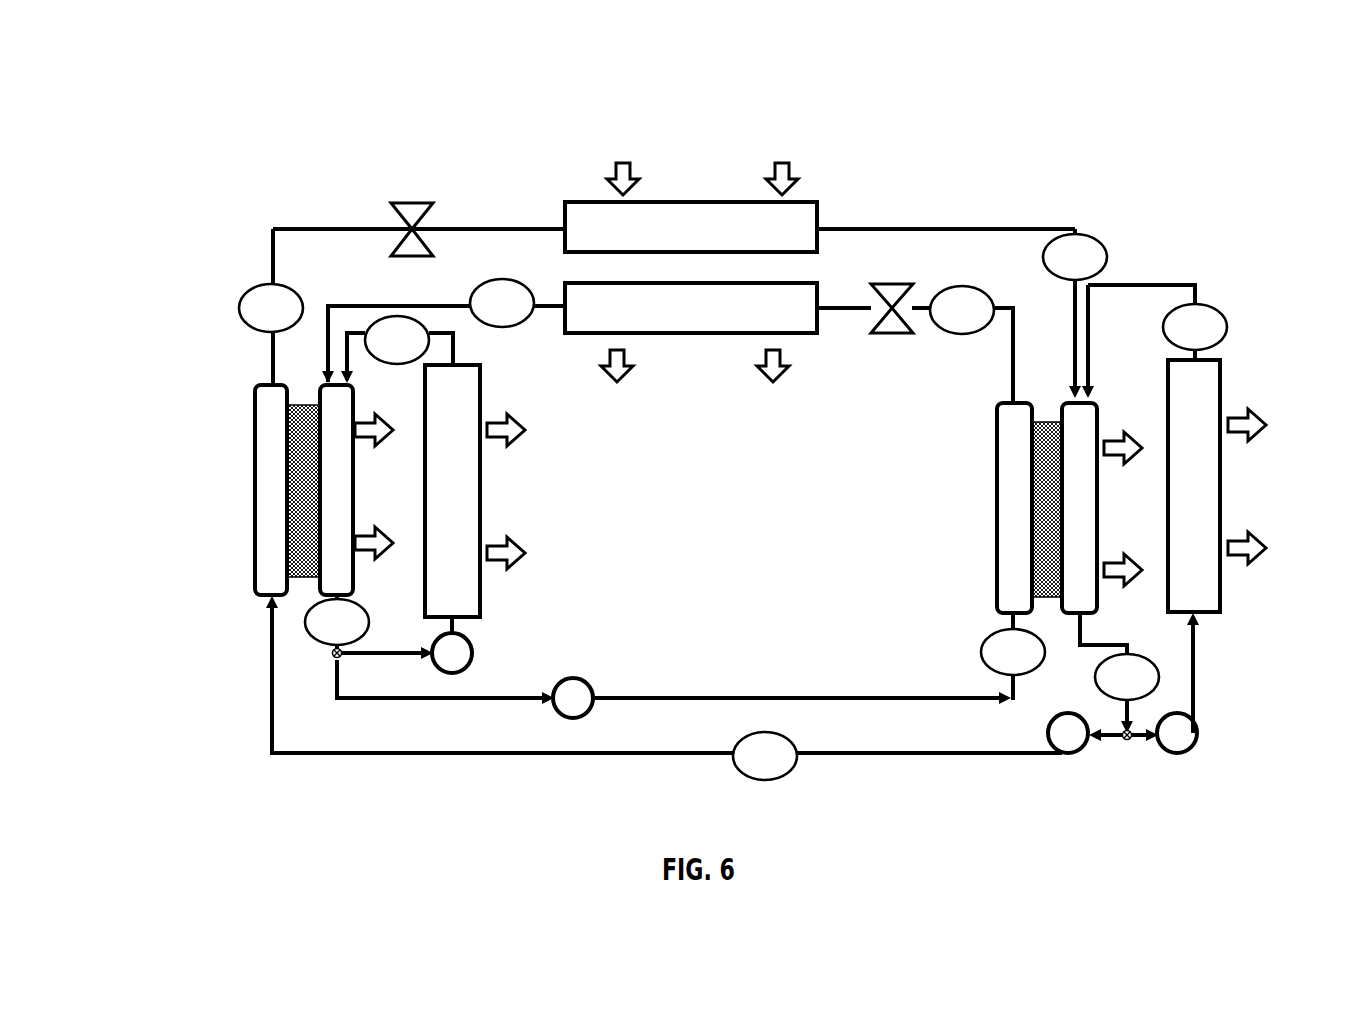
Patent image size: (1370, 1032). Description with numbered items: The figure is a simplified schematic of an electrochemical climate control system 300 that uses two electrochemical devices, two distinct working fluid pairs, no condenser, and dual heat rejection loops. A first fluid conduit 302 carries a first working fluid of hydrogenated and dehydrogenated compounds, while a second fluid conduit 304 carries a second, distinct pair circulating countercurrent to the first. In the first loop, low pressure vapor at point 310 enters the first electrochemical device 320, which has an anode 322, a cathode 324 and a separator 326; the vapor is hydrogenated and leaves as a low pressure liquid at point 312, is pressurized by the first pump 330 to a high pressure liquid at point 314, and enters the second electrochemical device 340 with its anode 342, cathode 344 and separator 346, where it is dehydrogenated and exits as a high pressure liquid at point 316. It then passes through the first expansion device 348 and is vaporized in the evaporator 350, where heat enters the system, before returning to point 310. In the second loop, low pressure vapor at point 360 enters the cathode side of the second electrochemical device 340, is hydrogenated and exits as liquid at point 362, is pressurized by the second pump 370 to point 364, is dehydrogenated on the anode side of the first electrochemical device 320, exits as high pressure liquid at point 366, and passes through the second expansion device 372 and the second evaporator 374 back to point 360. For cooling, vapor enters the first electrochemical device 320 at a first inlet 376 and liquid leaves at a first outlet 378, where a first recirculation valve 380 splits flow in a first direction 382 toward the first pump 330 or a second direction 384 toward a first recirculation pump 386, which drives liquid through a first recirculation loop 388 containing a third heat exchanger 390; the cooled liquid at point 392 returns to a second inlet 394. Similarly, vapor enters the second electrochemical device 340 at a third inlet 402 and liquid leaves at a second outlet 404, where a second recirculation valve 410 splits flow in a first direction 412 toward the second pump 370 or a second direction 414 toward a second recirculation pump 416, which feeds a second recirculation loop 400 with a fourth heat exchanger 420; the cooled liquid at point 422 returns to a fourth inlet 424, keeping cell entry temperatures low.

The electrochemical climate control system 300 is at (232, 98).
The first fluid conduit 302 is at (998, 228).
The second fluid conduit 304 is at (836, 305).
The point 310 is at (1094, 271).
The point 312 is at (1146, 691).
The point 314 is at (784, 770).
The point 316 is at (290, 322).
The first electrochemical device 320 is at (1026, 487).
The anode 322 is at (1012, 492).
The cathode 324 is at (1080, 490).
The separator 326 is at (1032, 545).
The first pump 330 is at (1072, 755).
The second electrochemical device 340 is at (295, 470).
The anode 342 is at (265, 425).
The cathode 344 is at (335, 553).
The separator 346 is at (288, 478).
The first expansion device 348 is at (415, 201).
The evaporator 350 is at (709, 243).
The point 360 is at (521, 317).
The point 362 is at (356, 636).
The point 364 is at (1032, 666).
The point 366 is at (981, 324).
The second pump 370 is at (593, 684).
The second expansion device 372 is at (895, 338).
The second evaporator 374 is at (709, 323).
The first inlet 376 is at (1071, 392).
The first outlet 378 is at (1008, 620).
The first recirculation valve 380 is at (1128, 742).
The first direction 382 is at (1095, 742).
The second direction 384 is at (1156, 742).
The first recirculation pump 386 is at (1198, 733).
The first recirculation loop 388 is at (1160, 284).
The third heat exchanger 390 is at (1222, 480).
The point 392 is at (1214, 341).
The second inlet 394 is at (1090, 393).
The second recirculation loop 400 is at (455, 343).
The third inlet 402 is at (325, 376).
The second outlet 404 is at (337, 600).
The second recirculation valve 410 is at (334, 657).
The first direction 412 is at (548, 706).
The second direction 414 is at (422, 657).
The second recirculation pump 416 is at (470, 645).
The fourth heat exchanger 420 is at (465, 517).
The point 422 is at (416, 354).
The fourth inlet 424 is at (345, 376).